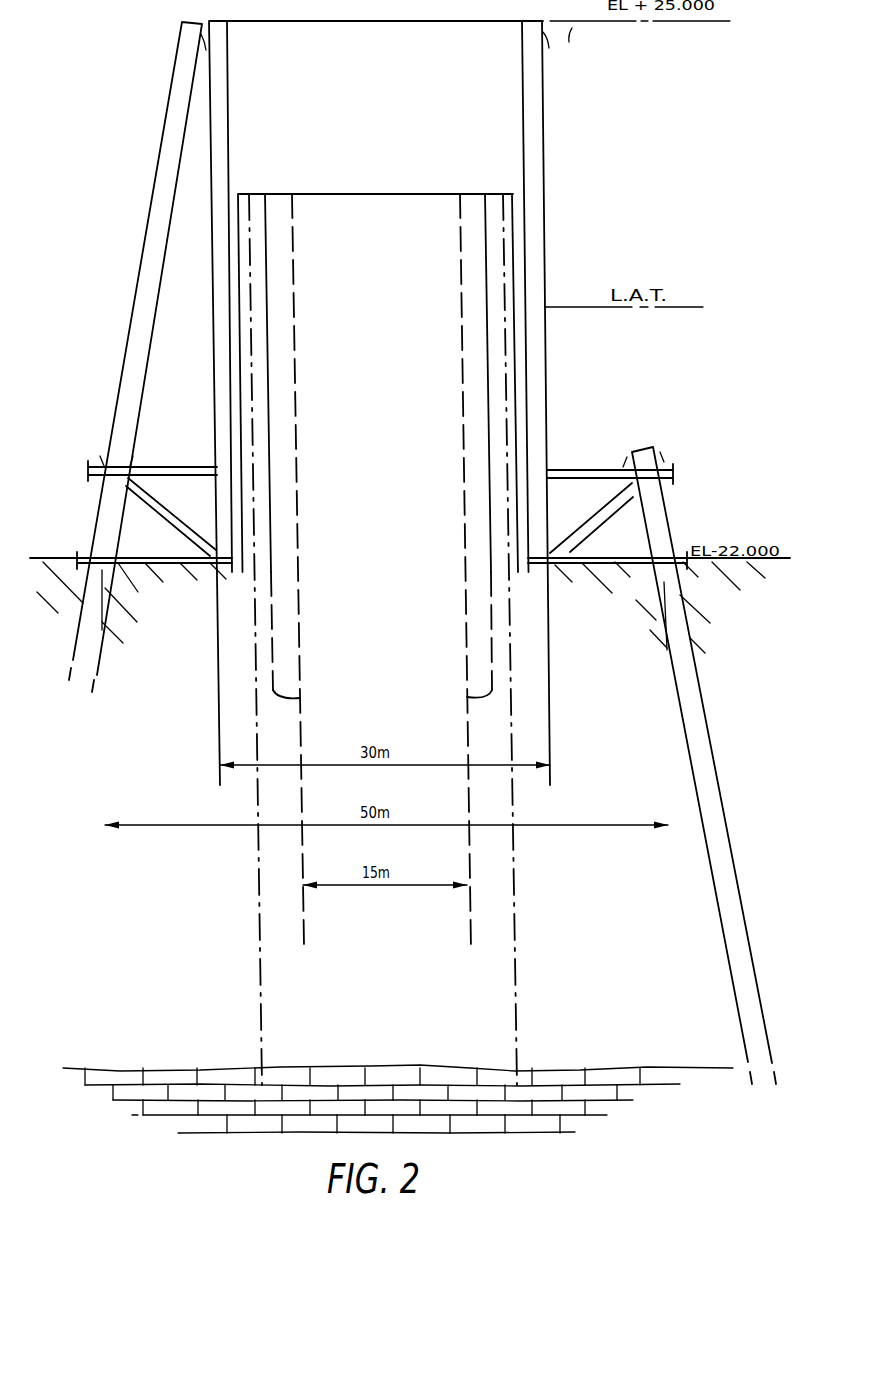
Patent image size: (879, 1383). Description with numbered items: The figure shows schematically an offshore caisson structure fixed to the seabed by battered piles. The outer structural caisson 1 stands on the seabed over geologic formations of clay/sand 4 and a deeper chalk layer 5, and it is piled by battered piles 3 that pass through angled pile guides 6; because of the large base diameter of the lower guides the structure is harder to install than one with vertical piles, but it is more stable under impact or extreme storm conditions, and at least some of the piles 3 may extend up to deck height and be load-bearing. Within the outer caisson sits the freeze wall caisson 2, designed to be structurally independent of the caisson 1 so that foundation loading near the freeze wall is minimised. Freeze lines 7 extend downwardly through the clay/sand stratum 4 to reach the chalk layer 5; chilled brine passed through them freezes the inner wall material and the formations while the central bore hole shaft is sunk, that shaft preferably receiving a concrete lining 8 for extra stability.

The outer structural caisson 1 is at (228, 62).
The freeze wall caisson 2 is at (331, 222).
The battered piles 3 is at (146, 268).
The clay/sand stratum 4 is at (172, 639).
The chalk layer 5 is at (570, 1083).
The angled pile guides 6 is at (95, 510).
The freeze lines 7 is at (537, 959).
The concrete lining 8 is at (471, 481).